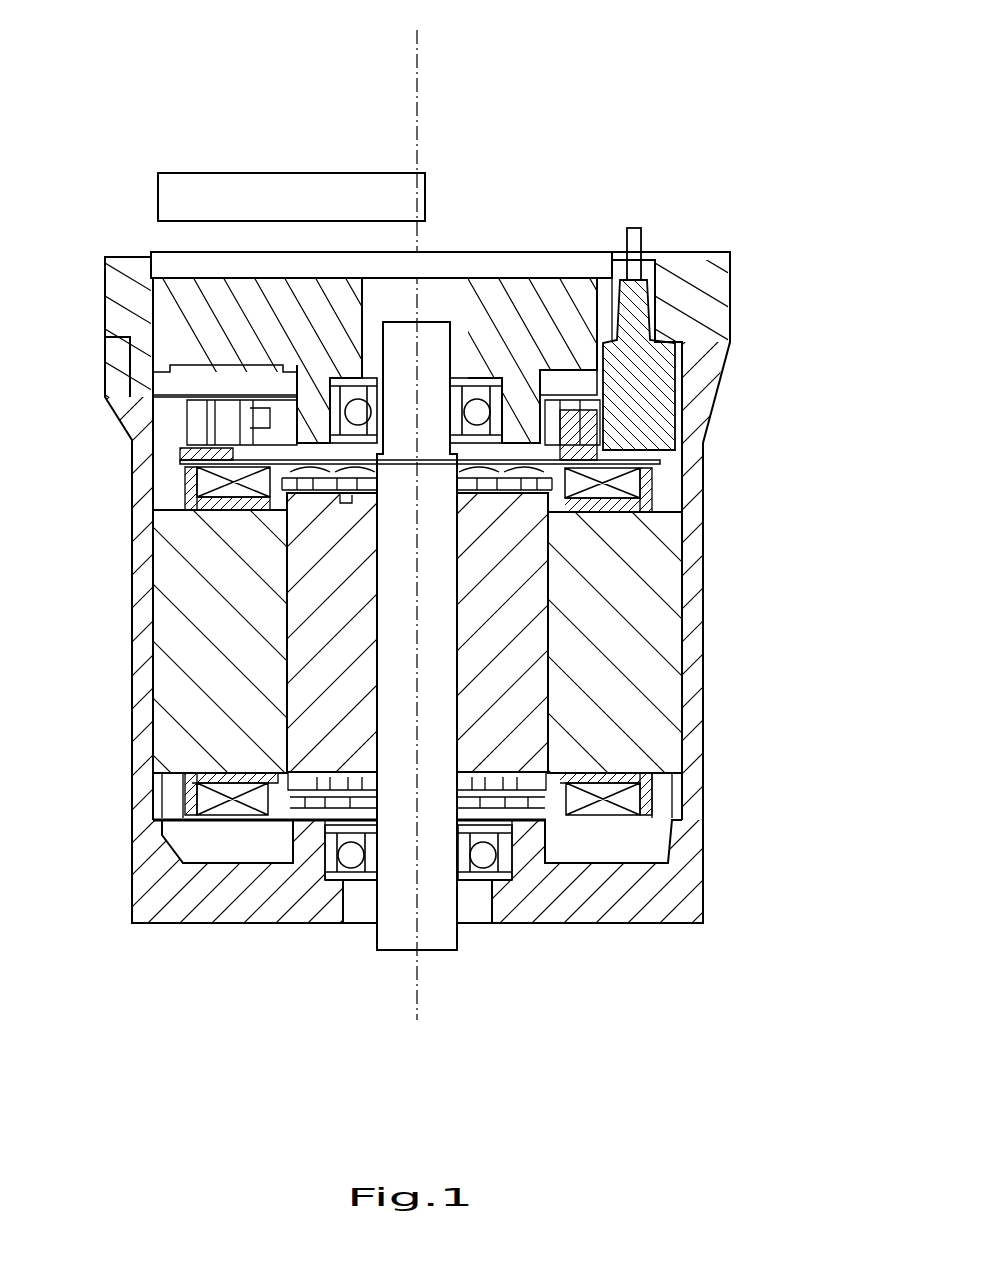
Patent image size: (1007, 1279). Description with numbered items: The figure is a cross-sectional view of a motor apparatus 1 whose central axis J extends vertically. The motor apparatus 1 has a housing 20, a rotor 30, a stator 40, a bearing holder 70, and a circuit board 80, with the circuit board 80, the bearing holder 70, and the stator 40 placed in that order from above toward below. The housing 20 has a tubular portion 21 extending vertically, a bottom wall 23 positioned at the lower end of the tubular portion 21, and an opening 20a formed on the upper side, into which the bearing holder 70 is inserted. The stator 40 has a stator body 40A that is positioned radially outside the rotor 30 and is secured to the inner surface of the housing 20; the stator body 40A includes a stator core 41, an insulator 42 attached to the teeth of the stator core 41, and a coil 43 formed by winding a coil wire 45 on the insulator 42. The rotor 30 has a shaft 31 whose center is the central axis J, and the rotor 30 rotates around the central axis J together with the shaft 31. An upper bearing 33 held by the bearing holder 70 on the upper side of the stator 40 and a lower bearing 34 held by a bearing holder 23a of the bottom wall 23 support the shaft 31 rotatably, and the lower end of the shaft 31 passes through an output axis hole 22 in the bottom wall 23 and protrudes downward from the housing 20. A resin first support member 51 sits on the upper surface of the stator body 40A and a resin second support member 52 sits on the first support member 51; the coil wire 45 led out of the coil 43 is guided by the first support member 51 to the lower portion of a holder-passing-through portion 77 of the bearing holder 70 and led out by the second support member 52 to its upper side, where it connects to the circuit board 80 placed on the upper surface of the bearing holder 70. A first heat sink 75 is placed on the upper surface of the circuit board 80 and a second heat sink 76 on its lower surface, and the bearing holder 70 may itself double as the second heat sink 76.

The motor apparatus 1 is at (800, 90).
The housing 20 is at (503, 628).
The opening 20a is at (150, 372).
The tubular portion 21 is at (695, 705).
The output axis hole 22 is at (350, 897).
The bottom wall 23 is at (197, 917).
The bearing holder 23a is at (532, 862).
The rotor 30 is at (520, 660).
The shaft 31 is at (440, 705).
The upper bearing 33 is at (478, 405).
The lower bearing 34 is at (370, 875).
The stator 40 is at (503, 639).
The stator body 40A is at (683, 562).
The stator core 41 is at (195, 626).
The insulator 42 is at (197, 505).
The coil 43 is at (205, 476).
The coil wire 45 is at (630, 228).
The first support member 51 is at (683, 452).
The second support member 52 is at (822, 597).
The bearing holder 70 is at (238, 307).
The first heat sink 75 is at (165, 200).
The second heat sink 76 is at (580, 275).
The holder-passing-through portion 77 is at (646, 280).
The circuit board 80 is at (683, 232).
The central axis J is at (420, 48).